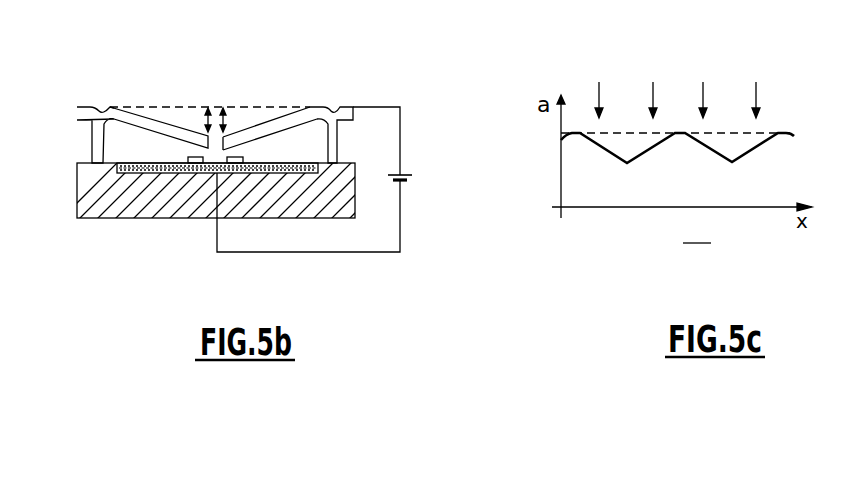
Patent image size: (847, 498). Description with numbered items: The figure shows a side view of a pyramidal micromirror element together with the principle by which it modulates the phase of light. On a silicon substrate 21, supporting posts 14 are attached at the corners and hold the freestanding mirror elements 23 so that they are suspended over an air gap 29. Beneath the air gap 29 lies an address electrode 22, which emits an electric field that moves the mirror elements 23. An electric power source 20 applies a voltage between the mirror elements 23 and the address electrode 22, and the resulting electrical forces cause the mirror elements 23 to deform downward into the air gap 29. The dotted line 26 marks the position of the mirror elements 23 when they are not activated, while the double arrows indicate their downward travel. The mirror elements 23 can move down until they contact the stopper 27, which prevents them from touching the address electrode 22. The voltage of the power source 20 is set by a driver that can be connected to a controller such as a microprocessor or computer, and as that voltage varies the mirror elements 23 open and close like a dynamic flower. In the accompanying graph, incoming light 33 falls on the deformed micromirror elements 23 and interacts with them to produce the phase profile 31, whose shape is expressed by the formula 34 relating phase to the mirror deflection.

In FIG. 5B, the supporting post 14 is at (97, 146).
In FIG. 5B, the electric power source 20 is at (408, 177).
In FIG. 5B, the silicon substrate 21 is at (83, 182).
In FIG. 5B, the address electrode 22 is at (267, 171).
In FIG. 5B, the mirror element 23 is at (155, 125).
In FIG. 5B, the dotted line 26 is at (197, 107).
In FIG. 5B, the stopper 27 is at (197, 160).
In FIG. 5B, the air gap 29 is at (143, 153).
In FIG. 5C, the phase profile 31 is at (752, 148).
In FIG. 5C, the incoming light 33 is at (768, 72).
In FIG. 5C, the formula 34 is at (765, 238).